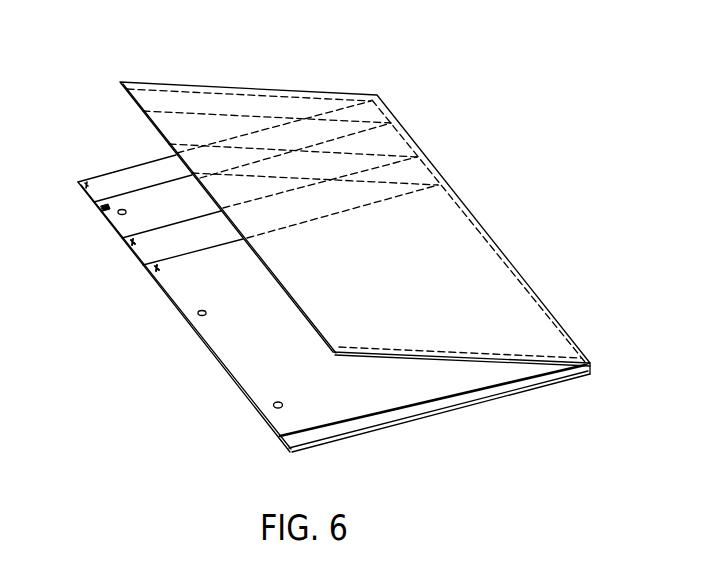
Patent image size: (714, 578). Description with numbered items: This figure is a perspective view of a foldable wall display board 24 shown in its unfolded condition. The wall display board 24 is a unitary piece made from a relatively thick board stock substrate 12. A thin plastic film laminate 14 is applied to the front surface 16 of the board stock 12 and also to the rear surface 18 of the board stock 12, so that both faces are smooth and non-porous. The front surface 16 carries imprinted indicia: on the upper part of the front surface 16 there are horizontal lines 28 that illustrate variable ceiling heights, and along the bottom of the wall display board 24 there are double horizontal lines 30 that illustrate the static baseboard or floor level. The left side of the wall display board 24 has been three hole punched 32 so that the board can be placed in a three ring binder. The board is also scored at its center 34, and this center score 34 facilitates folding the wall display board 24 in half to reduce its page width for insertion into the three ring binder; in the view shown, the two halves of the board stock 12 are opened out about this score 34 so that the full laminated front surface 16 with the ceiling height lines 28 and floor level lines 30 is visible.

The board stock substrate 12 is at (495, 397).
The thin plastic film laminate 14 is at (183, 288).
The front surface 16 is at (232, 350).
The rear surface 18 is at (280, 108).
The wall display board 24 is at (108, 175).
The horizontal lines 28 is at (108, 207).
The double horizontal lines 30 is at (282, 435).
The three hole punch 32 is at (197, 314).
The center score 34 is at (592, 364).